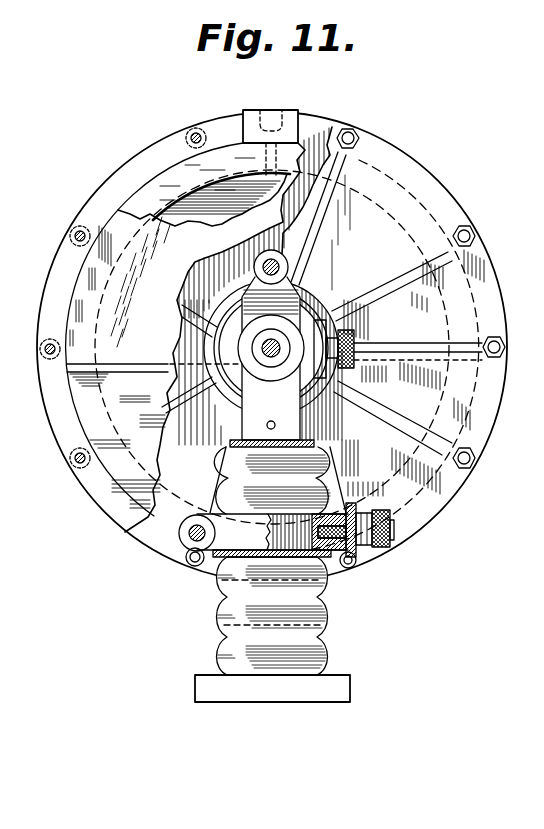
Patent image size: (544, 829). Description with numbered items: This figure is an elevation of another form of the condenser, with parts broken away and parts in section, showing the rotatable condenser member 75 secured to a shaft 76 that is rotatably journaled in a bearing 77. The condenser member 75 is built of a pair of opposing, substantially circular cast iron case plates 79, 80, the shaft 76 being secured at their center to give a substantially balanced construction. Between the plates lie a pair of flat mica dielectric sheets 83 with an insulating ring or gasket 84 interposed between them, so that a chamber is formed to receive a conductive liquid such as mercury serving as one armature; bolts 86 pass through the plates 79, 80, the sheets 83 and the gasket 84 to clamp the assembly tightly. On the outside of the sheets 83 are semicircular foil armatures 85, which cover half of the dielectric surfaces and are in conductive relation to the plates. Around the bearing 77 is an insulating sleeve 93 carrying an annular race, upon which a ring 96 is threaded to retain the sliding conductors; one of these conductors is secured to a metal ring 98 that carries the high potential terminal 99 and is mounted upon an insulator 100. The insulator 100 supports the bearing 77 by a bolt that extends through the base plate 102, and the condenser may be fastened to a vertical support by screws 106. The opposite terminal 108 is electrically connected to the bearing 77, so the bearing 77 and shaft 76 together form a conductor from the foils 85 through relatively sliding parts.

The rotatable condenser member 75 is at (492, 298).
The shaft 76 is at (271, 362).
The bearing 77 is at (256, 298).
The case plate 79 is at (138, 165).
The case plate 80 is at (393, 355).
The mica disks or insulating sheets 83 is at (225, 329).
The ring or gasket 84 is at (288, 113).
The foil conductors or armatures 85 is at (120, 405).
The bolts 86 is at (358, 137).
The insulating sleeve 93 is at (234, 386).
The ring 96 is at (207, 367).
The metal ring 98 is at (253, 538).
The high potential terminal 99 is at (386, 545).
The insulator 100 is at (314, 655).
The base plate 102 is at (311, 688).
The screws 106 is at (280, 265).
The terminal 108 is at (356, 340).